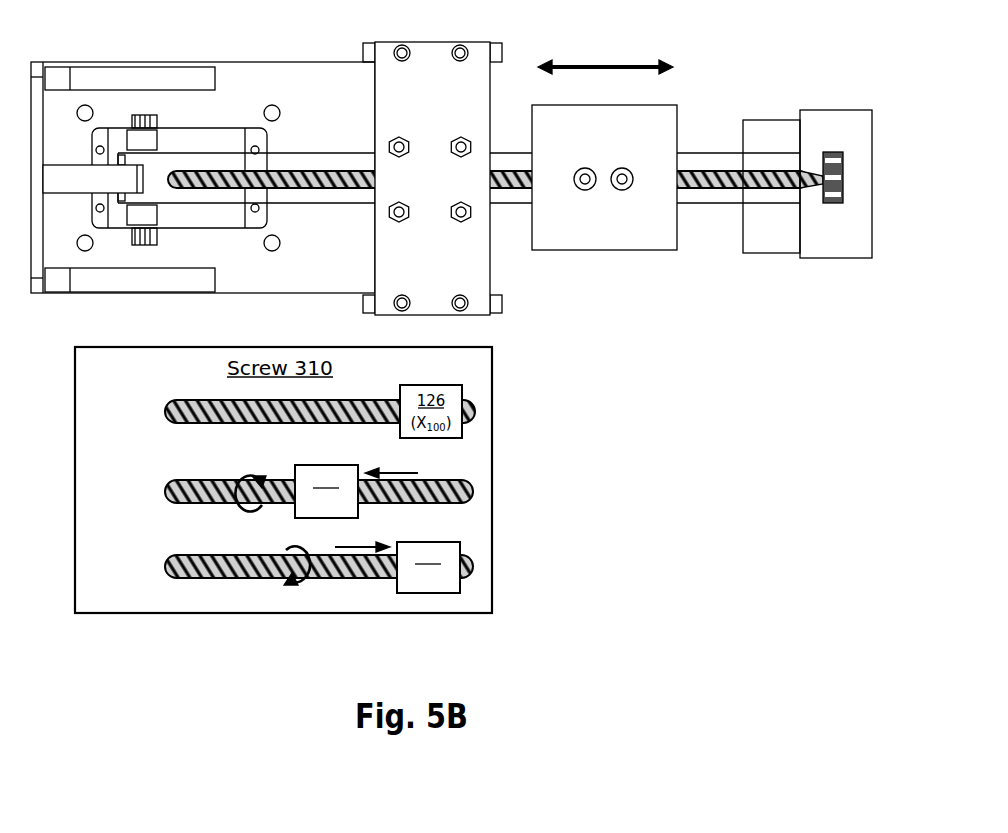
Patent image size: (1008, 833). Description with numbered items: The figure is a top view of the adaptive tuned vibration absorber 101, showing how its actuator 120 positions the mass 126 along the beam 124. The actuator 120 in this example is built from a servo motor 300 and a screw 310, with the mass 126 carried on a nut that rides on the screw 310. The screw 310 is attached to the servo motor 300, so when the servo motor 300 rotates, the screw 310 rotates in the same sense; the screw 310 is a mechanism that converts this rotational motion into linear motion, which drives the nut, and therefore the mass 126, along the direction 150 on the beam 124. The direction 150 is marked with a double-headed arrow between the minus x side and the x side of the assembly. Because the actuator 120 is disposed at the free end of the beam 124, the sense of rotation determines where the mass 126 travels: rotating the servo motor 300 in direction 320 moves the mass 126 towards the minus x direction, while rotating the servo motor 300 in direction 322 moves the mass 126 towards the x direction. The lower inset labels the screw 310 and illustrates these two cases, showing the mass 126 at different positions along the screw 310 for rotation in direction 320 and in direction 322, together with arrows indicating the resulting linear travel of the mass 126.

The adaptive tuned vibration absorber 101 is at (465, 286).
The actuator 120 is at (846, 117).
The beam 124 is at (716, 144).
The mass 126 is at (607, 232).
The direction 150 is at (607, 60).
The servo motor 300 is at (829, 219).
The screw 310 is at (314, 195).
The direction 320 is at (286, 491).
The direction 322 is at (288, 567).